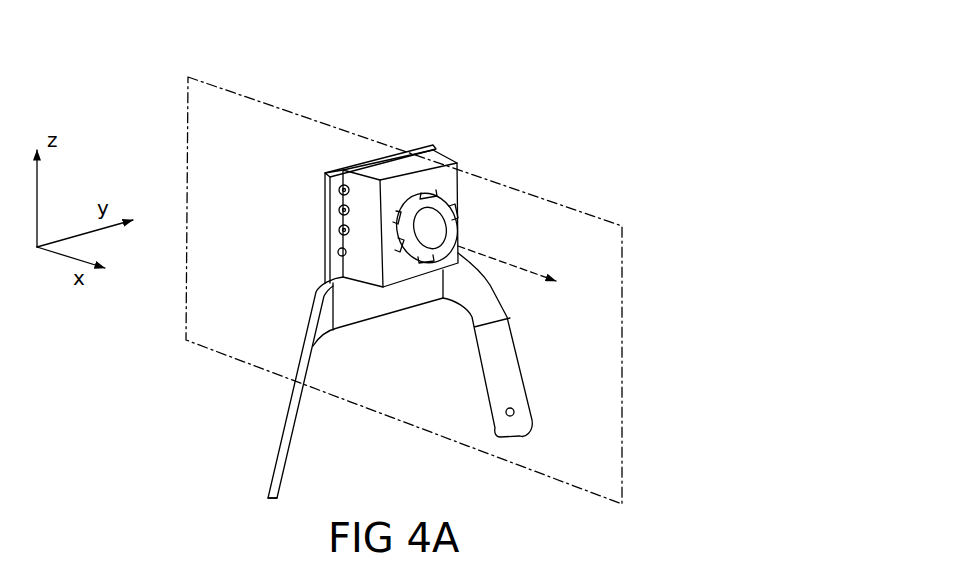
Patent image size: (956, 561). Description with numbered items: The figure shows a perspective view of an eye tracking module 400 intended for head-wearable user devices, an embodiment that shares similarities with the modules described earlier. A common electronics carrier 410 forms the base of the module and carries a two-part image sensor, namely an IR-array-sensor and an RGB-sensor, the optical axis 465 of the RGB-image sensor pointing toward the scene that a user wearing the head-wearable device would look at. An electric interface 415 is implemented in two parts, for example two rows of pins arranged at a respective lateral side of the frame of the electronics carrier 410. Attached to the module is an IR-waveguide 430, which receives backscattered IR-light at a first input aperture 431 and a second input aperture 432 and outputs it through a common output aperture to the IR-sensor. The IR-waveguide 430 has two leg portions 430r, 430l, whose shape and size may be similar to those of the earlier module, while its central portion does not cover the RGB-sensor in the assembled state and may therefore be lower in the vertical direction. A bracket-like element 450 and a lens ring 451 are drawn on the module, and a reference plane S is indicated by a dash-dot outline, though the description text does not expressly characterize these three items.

The eye tracking module 400 is at (420, 48).
The common electronics carrier 410 is at (434, 146).
The electric interface 415 is at (344, 171).
The IR-waveguide 430 is at (454, 357).
The leg portion 430r is at (285, 365).
The leg portion 430l is at (536, 378).
The first input aperture 431 is at (266, 466).
The second input aperture 432 is at (523, 425).
The bracket 450 is at (413, 291).
The lens ring 451 is at (449, 212).
The optical axis 465 is at (538, 268).
The reference plane S is at (599, 222).